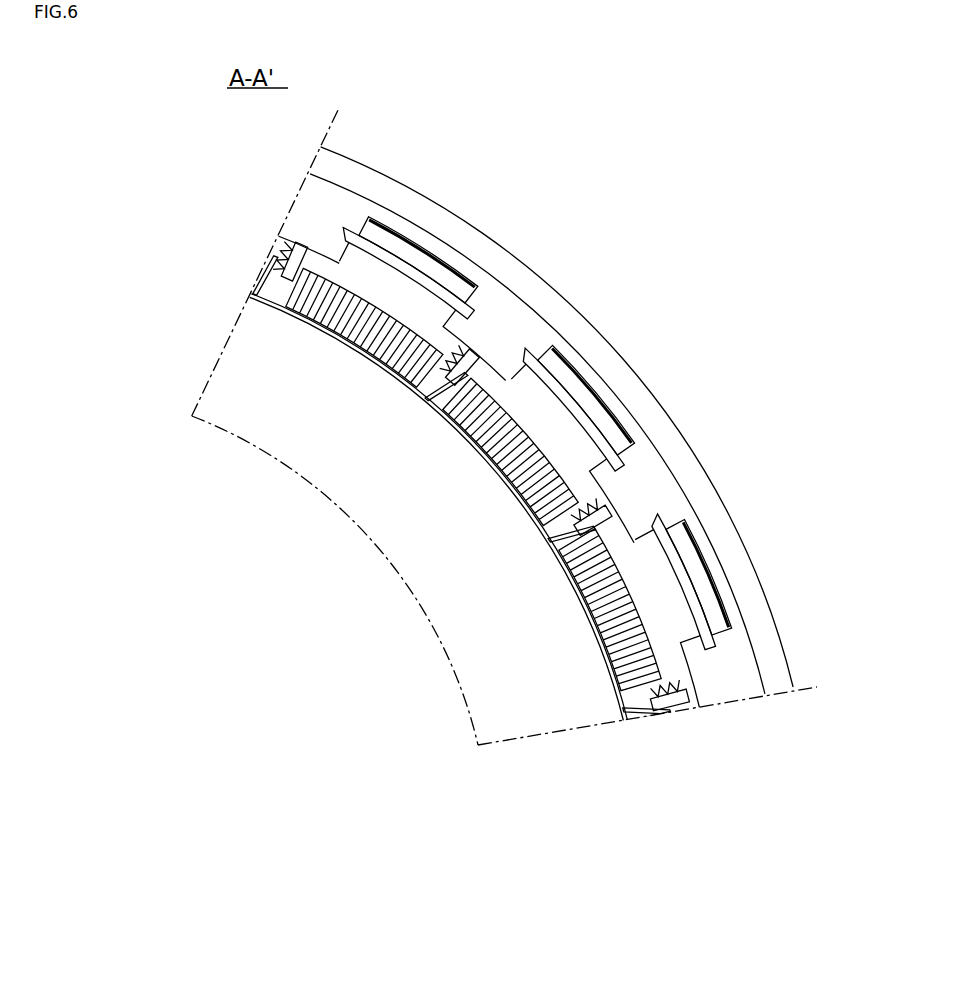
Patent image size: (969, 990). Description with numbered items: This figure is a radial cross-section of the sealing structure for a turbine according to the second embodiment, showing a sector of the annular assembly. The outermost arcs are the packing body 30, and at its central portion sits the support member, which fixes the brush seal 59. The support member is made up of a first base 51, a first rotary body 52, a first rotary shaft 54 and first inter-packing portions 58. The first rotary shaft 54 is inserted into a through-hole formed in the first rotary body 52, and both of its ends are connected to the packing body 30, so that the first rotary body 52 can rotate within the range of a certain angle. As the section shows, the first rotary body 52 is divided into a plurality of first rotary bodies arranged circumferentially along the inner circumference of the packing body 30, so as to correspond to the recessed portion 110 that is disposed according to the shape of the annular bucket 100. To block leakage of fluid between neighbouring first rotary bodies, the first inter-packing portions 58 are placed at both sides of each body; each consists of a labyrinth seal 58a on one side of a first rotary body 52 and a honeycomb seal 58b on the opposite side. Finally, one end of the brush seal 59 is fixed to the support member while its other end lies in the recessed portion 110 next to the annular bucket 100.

The packing body 30 is at (571, 324).
The first base 51 is at (637, 490).
The first rotary body 52 is at (648, 603).
The first rotary shaft 54 is at (673, 560).
The first inter-packing portion 58 is at (688, 786).
The labyrinth seal 58a is at (692, 692).
The honeycomb seal 58b is at (651, 712).
The brush seal 59 is at (622, 676).
The annular bucket 100 is at (418, 547).
The recessed portion 110 is at (277, 293).